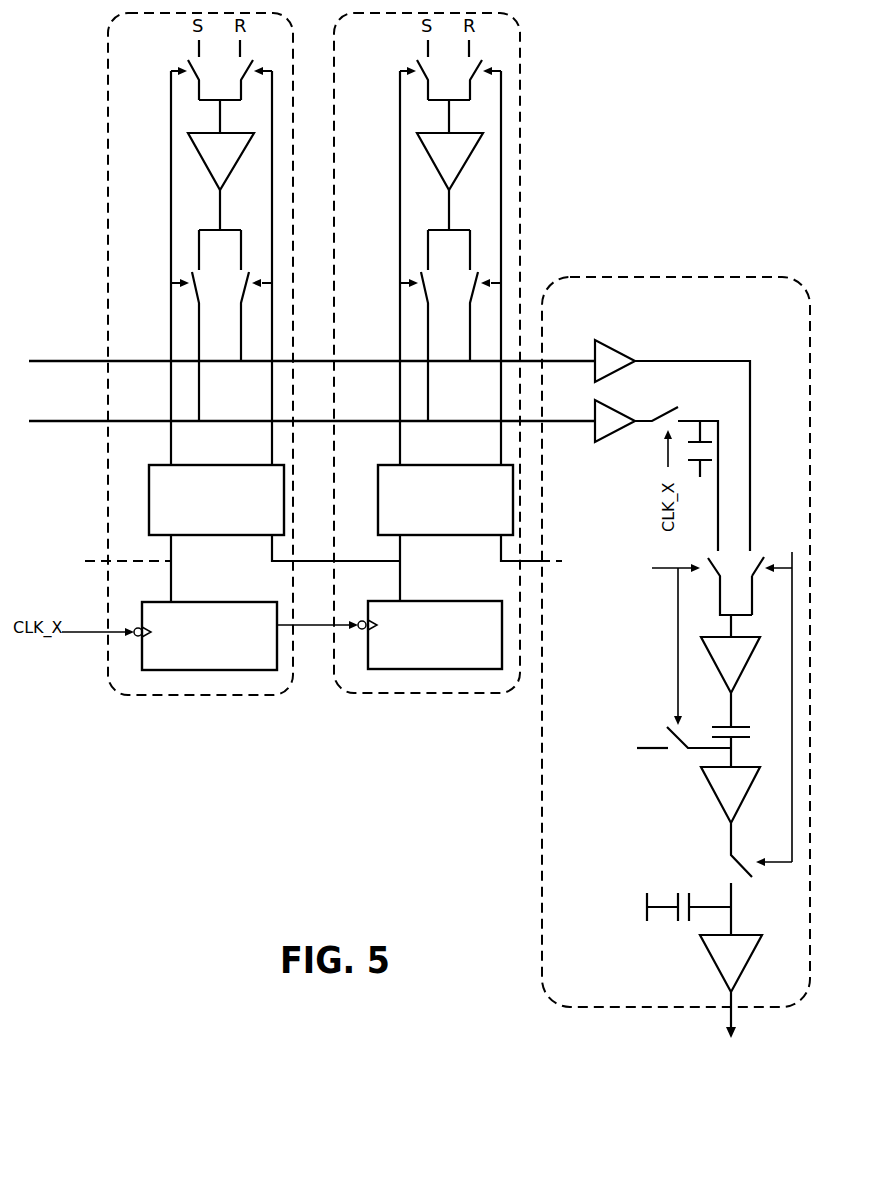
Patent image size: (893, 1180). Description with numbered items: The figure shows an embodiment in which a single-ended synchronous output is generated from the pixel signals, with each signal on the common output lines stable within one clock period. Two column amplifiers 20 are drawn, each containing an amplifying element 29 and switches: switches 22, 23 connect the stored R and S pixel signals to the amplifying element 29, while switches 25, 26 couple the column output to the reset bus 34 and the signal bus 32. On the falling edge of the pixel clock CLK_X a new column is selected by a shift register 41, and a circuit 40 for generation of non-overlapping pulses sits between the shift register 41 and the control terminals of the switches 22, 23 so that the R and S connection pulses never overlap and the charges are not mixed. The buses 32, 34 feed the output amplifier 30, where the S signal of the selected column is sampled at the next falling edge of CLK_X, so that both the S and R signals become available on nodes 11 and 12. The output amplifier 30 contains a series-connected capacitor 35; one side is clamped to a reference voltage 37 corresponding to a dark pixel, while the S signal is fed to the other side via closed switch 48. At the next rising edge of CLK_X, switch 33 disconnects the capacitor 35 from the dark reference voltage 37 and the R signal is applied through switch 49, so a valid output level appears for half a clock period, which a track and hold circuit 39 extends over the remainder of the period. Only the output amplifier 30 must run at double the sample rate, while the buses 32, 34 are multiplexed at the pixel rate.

The column amplifier 20 is at (108, 186).
The switch 22 is at (247, 56).
The switch 23 is at (180, 60).
The amplifying element 29 is at (222, 158).
The switch 25 is at (252, 296).
The switch 26 is at (188, 296).
The reset bus 34 is at (93, 361).
The signal bus 32 is at (62, 423).
The circuit for generation of non-overlapping pulses 40 is at (160, 466).
The shift register 41 is at (255, 602).
The output amplifier 30 is at (607, 297).
The node 12 is at (692, 440).
The node 11 is at (681, 470).
The switch 49 is at (766, 546).
The switch 48 is at (716, 557).
The switch 33 is at (658, 723).
The series-connected capacitor 35 is at (742, 722).
The reference voltage 37 is at (605, 756).
The track and hold circuit 39 is at (688, 925).